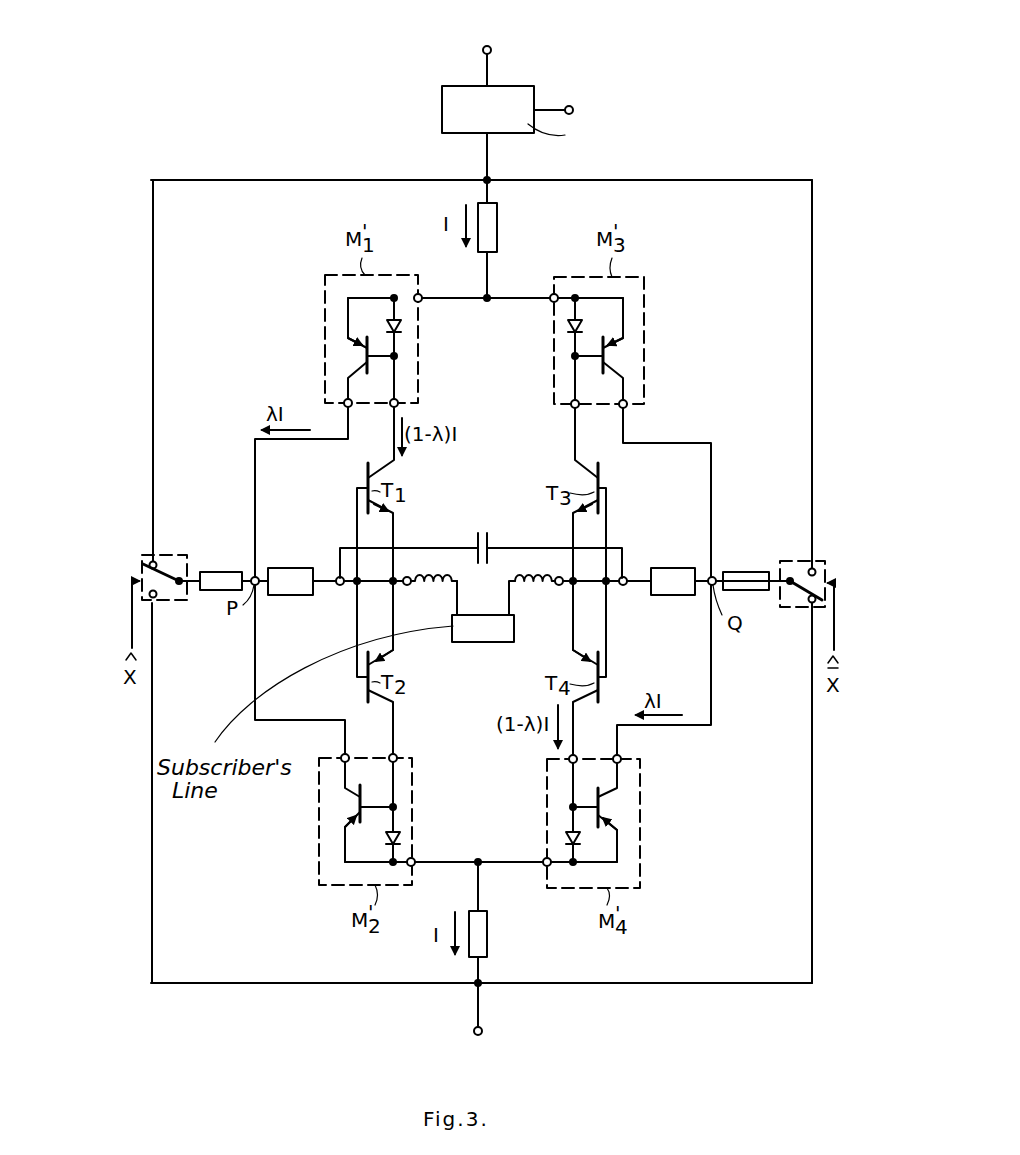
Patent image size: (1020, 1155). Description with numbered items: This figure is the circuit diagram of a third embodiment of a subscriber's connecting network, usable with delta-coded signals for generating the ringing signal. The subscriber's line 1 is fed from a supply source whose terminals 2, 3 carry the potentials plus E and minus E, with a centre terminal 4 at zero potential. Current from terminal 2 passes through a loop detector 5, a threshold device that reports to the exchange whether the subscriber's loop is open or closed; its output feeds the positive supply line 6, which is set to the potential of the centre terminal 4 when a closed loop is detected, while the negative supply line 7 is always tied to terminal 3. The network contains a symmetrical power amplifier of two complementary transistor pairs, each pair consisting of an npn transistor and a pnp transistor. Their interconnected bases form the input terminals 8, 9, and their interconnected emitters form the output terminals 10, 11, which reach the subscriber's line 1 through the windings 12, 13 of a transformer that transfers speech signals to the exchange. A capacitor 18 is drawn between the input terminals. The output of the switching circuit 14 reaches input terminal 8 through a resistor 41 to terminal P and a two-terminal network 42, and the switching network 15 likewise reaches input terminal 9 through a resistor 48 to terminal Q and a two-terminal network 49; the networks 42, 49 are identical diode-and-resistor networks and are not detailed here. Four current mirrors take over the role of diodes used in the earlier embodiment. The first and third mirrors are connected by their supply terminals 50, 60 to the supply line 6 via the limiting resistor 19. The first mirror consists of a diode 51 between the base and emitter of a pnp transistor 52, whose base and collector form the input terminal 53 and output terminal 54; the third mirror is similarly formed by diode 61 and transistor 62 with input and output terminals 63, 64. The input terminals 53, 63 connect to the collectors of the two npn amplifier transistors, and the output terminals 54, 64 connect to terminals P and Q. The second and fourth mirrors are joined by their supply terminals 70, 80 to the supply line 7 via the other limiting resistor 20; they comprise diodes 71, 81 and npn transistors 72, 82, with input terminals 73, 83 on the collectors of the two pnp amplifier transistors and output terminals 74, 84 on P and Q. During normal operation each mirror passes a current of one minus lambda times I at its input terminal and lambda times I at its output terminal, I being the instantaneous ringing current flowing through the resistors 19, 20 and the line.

The subscriber's line 1 is at (489, 643).
The supply source terminal 2 is at (491, 47).
The supply source terminal 3 is at (482, 1034).
The centre terminal 4 is at (568, 105).
The loop detector 5 is at (446, 106).
The positive supply line 6 is at (336, 180).
The negative supply line 7 is at (300, 984).
The input terminal 8 is at (340, 585).
The input terminal 9 is at (623, 585).
The output terminal 10 is at (407, 585).
The output terminal 11 is at (559, 585).
The winding 12 is at (445, 575).
The winding 13 is at (549, 575).
The switching circuit 14 is at (172, 555).
The switching network 15 is at (790, 561).
The capacitor 18 is at (478, 533).
The limiting resistor 19 is at (497, 228).
The limiting resistor 20 is at (487, 935).
The resistor 41 is at (222, 572).
The two-terminal network 42 is at (293, 568).
The resistor 48 is at (743, 572).
The two-terminal network 49 is at (678, 568).
The supply terminal 50 is at (420, 293).
The diode 51 is at (402, 331).
The pnp transistor 52 is at (355, 352).
The input terminal 53 is at (398, 406).
The output terminal 54 is at (346, 408).
The supply terminal 60 is at (551, 296).
The diode 61 is at (568, 331).
The transistor 62 is at (608, 355).
The input terminal 63 is at (573, 408).
The output terminal 64 is at (627, 407).
The supply terminal 70 is at (415, 866).
The diode 71 is at (400, 838).
The npn transistor 72 is at (355, 798).
The input terminal 73 is at (392, 755).
The output terminal 74 is at (343, 756).
The supply terminal 80 is at (545, 866).
The diode 81 is at (565, 838).
The npn transistor 82 is at (605, 810).
The input terminal 83 is at (575, 756).
The output terminal 84 is at (621, 758).